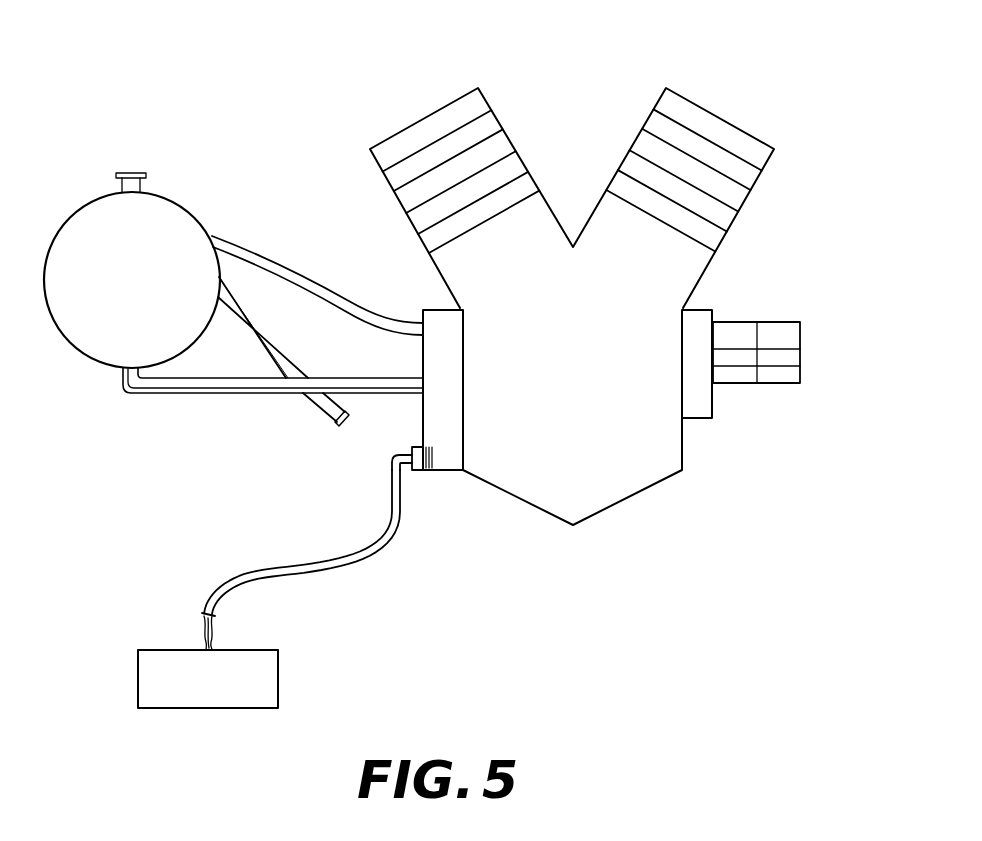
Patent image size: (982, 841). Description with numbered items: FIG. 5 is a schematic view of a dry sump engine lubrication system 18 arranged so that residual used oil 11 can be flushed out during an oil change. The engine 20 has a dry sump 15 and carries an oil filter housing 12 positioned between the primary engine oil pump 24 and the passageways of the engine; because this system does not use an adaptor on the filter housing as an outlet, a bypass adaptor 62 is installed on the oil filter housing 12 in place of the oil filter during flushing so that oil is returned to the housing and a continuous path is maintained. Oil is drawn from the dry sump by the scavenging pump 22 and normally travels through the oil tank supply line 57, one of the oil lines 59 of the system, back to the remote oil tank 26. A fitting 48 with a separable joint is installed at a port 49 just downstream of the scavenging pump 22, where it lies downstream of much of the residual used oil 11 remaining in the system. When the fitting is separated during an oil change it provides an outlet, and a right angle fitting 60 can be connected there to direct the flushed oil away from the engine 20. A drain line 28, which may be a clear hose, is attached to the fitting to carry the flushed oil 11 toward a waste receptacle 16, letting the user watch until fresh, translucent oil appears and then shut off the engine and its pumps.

The lubrication system 18 is at (257, 86).
The engine 20 is at (722, 115).
The oil pump 24 is at (438, 320).
The dry sump 15 is at (594, 492).
The oil filter housing 12 is at (702, 418).
The bypass adaptor 62 is at (780, 320).
The oil tank 26 is at (112, 192).
The oil tank supply line 57 is at (297, 358).
The fitting 48 is at (417, 448).
The scavenging pump 22 is at (438, 457).
The port 49 is at (430, 472).
The oil lines 59 is at (293, 420).
The right angle fitting 60 is at (390, 465).
The drain line 28 is at (253, 573).
The residual used oil 11 is at (200, 633).
The waste receptacle 16 is at (263, 650).